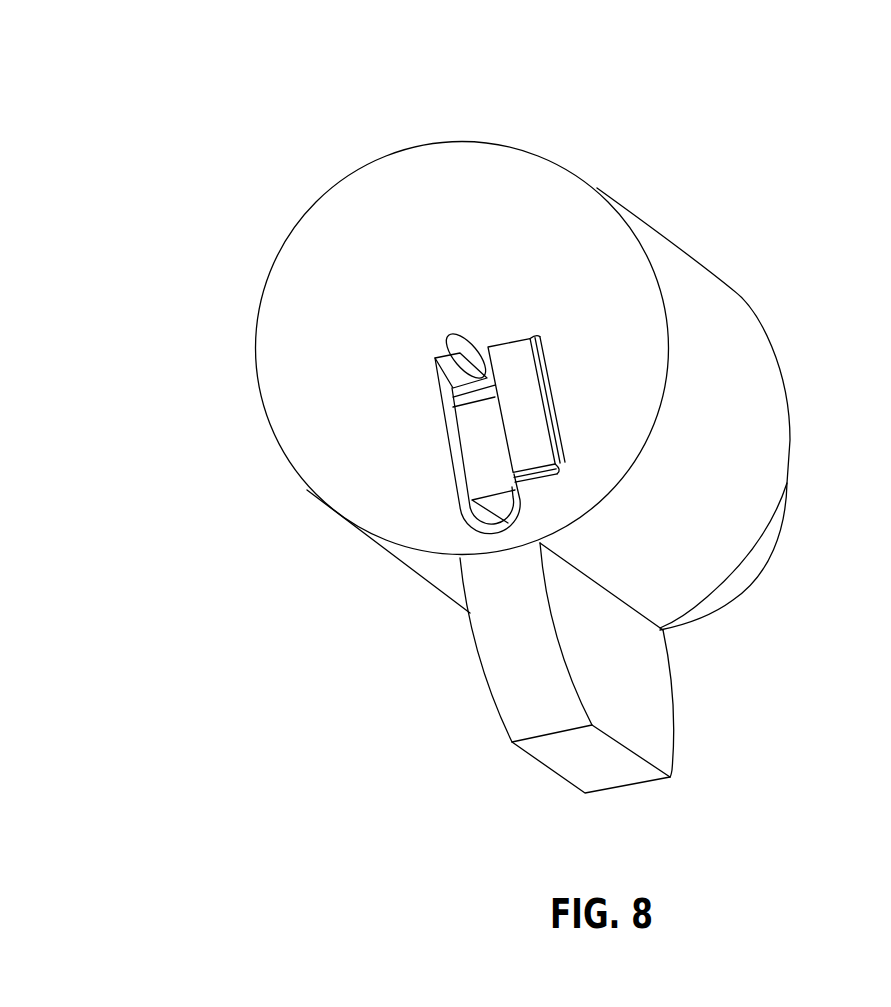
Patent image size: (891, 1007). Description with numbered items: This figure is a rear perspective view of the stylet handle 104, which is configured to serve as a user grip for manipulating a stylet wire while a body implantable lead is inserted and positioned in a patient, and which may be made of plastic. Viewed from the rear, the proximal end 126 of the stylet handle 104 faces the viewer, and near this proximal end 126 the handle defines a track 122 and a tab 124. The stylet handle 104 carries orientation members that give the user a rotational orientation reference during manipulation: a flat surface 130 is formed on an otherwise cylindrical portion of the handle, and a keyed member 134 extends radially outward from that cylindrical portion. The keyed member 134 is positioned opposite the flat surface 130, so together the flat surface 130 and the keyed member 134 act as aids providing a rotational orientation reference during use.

The stylet handle 104 is at (740, 148).
The track 122 is at (467, 452).
The tab 124 is at (548, 445).
The proximal end 126 is at (283, 296).
The flat surface 130 is at (423, 147).
The keyed member 134 is at (503, 645).